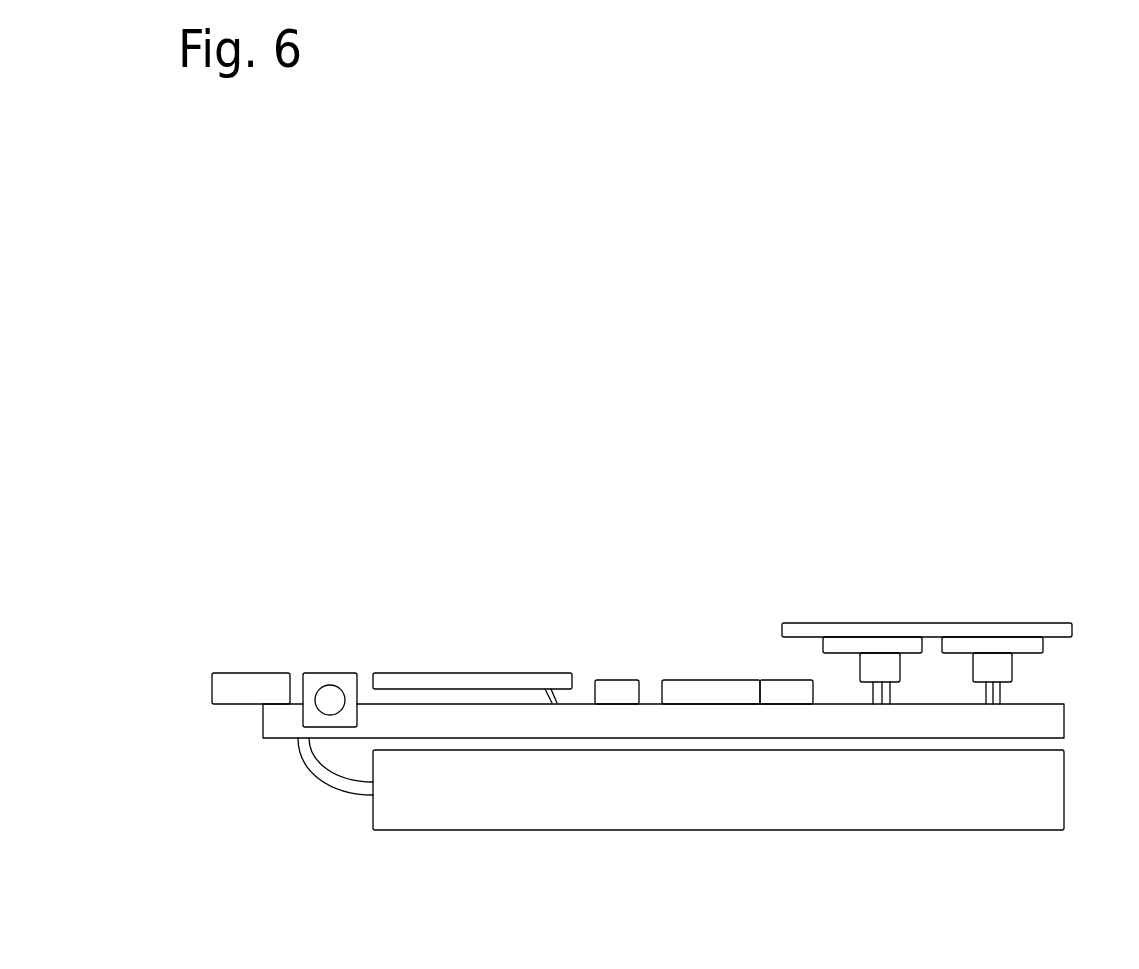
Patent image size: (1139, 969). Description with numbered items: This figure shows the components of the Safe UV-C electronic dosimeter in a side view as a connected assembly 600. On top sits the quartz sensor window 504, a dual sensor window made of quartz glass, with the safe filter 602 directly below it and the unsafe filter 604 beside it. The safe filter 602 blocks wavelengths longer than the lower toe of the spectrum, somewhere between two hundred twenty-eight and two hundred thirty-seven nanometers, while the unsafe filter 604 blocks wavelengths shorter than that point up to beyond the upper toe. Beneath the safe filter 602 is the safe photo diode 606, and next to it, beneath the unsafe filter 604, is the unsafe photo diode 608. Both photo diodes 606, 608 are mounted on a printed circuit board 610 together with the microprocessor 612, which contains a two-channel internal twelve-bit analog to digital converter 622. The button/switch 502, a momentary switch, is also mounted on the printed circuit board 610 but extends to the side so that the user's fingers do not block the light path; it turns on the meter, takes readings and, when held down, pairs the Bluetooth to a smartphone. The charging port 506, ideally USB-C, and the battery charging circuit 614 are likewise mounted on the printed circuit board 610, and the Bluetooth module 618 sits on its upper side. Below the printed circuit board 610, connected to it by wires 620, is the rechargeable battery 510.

The connected assembly 600 is at (950, 200).
The button/switch 502 is at (332, 680).
The quartz sensor window 504 is at (917, 630).
The charging port 506 is at (252, 690).
The battery 510 is at (477, 805).
The safe filter 602 is at (905, 645).
The unsafe filter 604 is at (977, 645).
The safe photo diode 606 is at (875, 667).
The unsafe photo diode 608 is at (997, 665).
The printed circuit board 610 is at (1052, 725).
The microprocessor 612 is at (712, 680).
The battery charging circuit 614 is at (617, 680).
The Bluetooth module 618 is at (458, 680).
The wires 620 is at (315, 792).
The analog to digital converter 622 is at (787, 680).